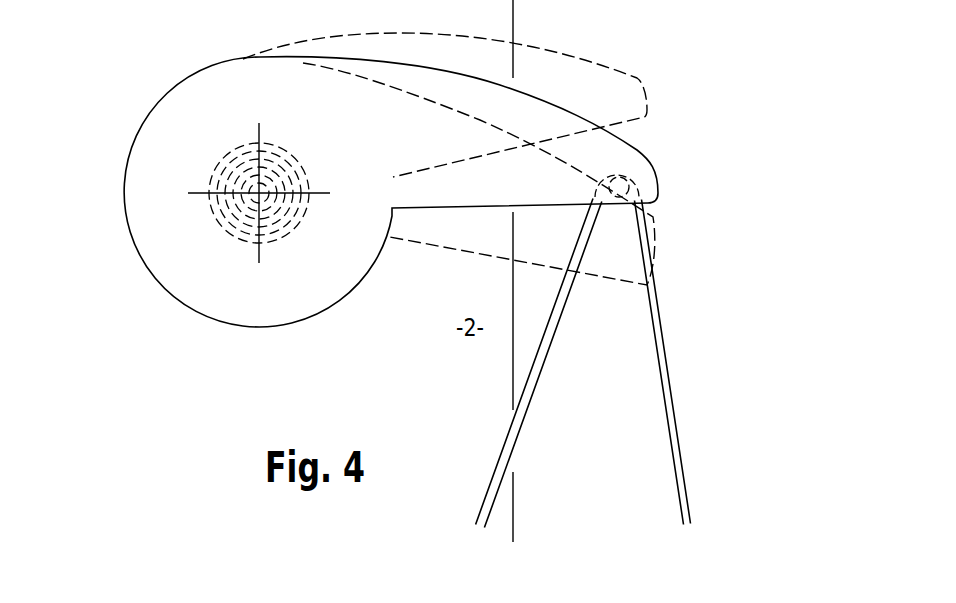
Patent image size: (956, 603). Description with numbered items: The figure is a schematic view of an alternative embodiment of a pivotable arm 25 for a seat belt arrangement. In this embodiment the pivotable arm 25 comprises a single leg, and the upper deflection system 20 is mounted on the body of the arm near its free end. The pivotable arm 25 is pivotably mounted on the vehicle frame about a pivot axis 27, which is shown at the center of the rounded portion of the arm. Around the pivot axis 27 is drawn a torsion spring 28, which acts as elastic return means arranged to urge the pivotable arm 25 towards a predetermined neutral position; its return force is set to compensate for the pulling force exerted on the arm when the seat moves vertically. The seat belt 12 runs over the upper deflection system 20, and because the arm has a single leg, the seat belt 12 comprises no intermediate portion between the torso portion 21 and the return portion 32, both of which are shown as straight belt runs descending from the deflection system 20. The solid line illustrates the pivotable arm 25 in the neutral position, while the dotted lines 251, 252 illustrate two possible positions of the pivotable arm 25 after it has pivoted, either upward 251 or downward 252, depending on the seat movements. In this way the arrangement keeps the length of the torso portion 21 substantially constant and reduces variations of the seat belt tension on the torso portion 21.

The seat belt 12 is at (688, 417).
The upper deflection system 20 is at (655, 213).
The torso portion 21 is at (688, 483).
The pivotable arm 25 is at (170, 70).
The upward pivoted position 251 is at (641, 87).
The downward pivoted position 252 is at (651, 253).
The pivot axis 27 is at (259, 195).
The torsion spring 28 is at (220, 165).
The return portion 32 is at (489, 485).